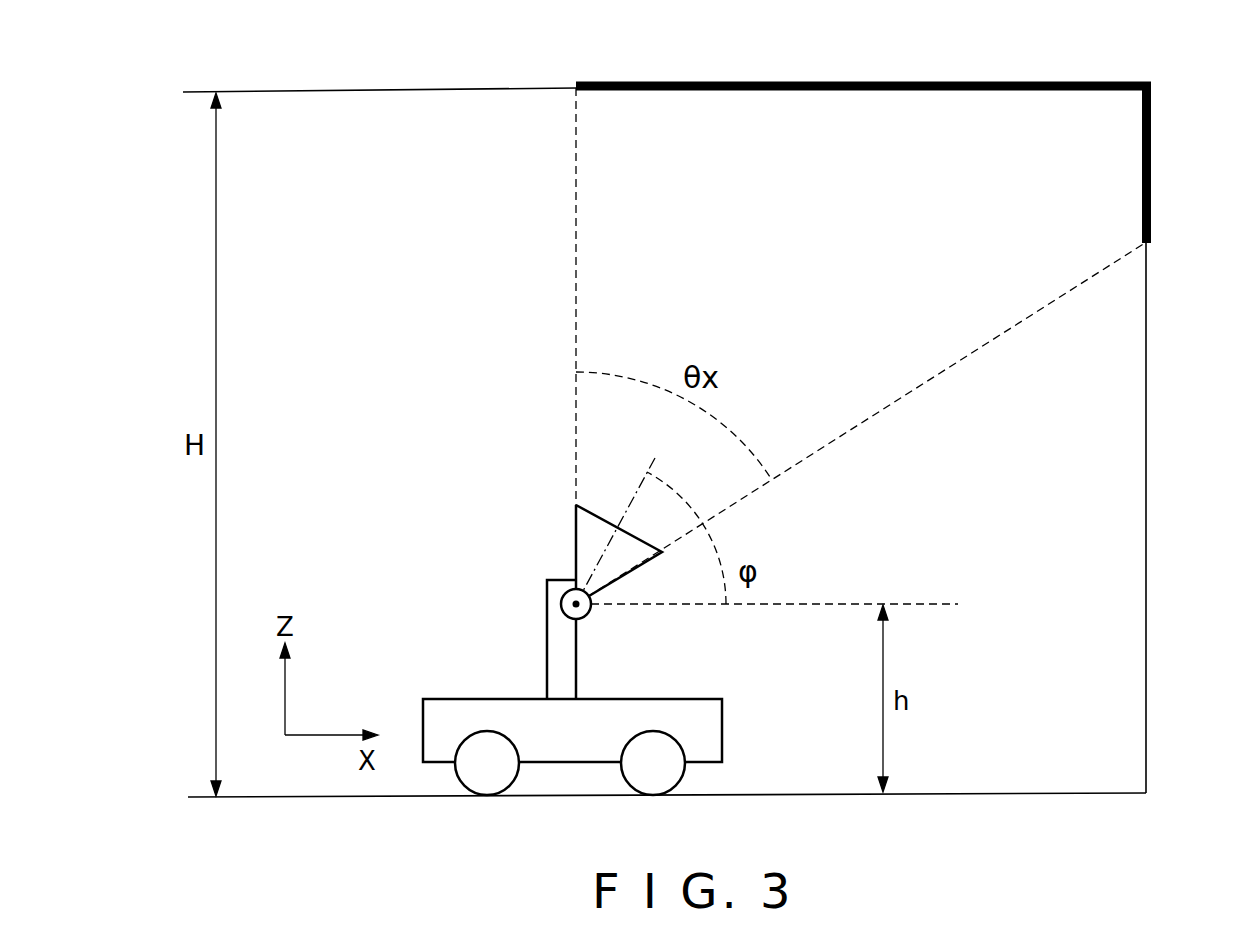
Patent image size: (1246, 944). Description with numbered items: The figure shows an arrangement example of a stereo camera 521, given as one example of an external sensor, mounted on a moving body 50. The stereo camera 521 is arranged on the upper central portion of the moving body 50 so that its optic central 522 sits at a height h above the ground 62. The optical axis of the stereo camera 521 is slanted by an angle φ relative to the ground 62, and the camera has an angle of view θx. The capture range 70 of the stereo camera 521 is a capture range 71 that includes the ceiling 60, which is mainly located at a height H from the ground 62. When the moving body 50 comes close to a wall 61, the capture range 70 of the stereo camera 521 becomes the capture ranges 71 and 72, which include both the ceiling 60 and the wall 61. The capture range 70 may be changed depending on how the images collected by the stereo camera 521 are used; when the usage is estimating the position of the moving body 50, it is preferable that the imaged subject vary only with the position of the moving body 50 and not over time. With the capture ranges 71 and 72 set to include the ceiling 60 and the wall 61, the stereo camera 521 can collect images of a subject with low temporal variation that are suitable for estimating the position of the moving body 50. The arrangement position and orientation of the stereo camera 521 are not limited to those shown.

The moving body 50 is at (722, 727).
The stereo camera 521 is at (587, 540).
The optic central 522 is at (590, 608).
The ceiling 60 is at (396, 90).
The wall 61 is at (1146, 480).
The ground 62 is at (1020, 797).
The capture range 70 is at (899, 126).
The capture range 71 is at (862, 82).
The capture range 72 is at (1151, 163).